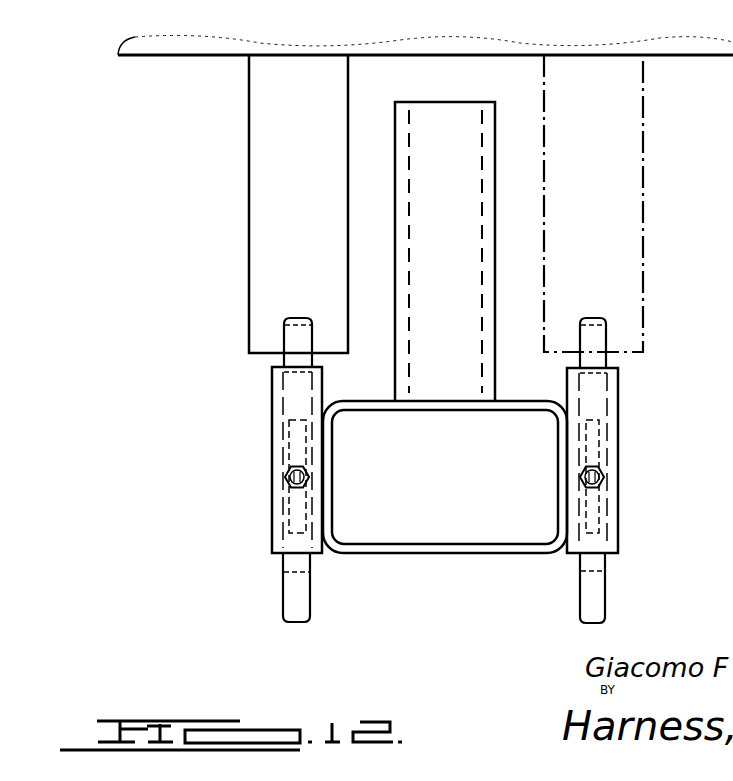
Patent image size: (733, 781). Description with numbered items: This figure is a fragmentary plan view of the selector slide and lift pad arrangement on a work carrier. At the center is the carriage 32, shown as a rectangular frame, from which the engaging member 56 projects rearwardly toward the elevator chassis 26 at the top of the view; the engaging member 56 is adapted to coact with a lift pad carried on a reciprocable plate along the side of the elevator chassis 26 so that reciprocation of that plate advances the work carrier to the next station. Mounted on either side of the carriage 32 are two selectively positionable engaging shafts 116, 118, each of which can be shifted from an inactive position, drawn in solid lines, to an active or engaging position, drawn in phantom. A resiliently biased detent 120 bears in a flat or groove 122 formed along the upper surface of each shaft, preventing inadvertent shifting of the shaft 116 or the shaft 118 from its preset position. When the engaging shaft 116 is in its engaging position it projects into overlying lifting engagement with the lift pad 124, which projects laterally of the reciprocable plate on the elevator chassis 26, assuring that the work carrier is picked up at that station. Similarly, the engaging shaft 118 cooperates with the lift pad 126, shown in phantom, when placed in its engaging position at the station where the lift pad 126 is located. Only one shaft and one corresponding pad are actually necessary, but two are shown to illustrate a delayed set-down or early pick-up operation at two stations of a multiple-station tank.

The elevator chassis 26 is at (600, 14).
The engaging member 56 is at (478, 80).
The lift pad 124 is at (262, 238).
The lift pad 126 is at (633, 198).
The carriage 32 is at (427, 556).
The flat or groove 122 is at (290, 438).
The resiliently biased detent 120 is at (288, 476).
The engaging shaft 116 is at (287, 328).
The engaging shaft 118 is at (600, 336).